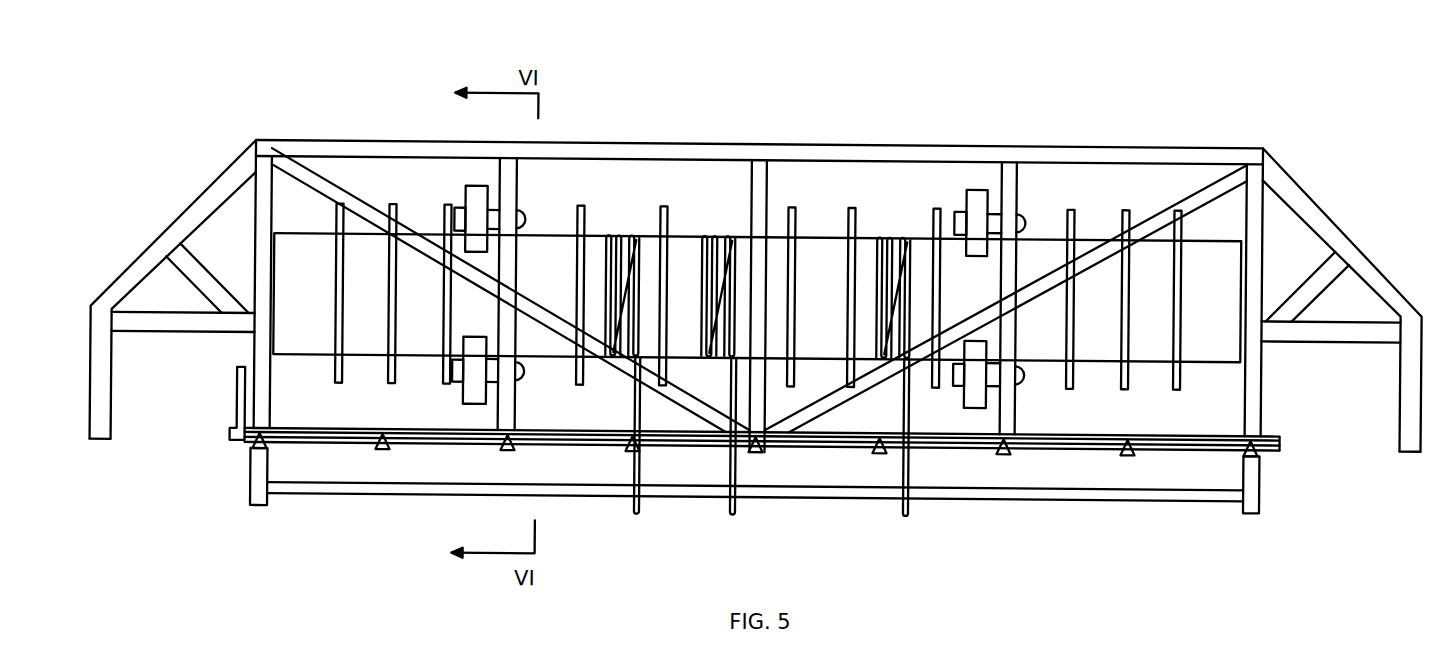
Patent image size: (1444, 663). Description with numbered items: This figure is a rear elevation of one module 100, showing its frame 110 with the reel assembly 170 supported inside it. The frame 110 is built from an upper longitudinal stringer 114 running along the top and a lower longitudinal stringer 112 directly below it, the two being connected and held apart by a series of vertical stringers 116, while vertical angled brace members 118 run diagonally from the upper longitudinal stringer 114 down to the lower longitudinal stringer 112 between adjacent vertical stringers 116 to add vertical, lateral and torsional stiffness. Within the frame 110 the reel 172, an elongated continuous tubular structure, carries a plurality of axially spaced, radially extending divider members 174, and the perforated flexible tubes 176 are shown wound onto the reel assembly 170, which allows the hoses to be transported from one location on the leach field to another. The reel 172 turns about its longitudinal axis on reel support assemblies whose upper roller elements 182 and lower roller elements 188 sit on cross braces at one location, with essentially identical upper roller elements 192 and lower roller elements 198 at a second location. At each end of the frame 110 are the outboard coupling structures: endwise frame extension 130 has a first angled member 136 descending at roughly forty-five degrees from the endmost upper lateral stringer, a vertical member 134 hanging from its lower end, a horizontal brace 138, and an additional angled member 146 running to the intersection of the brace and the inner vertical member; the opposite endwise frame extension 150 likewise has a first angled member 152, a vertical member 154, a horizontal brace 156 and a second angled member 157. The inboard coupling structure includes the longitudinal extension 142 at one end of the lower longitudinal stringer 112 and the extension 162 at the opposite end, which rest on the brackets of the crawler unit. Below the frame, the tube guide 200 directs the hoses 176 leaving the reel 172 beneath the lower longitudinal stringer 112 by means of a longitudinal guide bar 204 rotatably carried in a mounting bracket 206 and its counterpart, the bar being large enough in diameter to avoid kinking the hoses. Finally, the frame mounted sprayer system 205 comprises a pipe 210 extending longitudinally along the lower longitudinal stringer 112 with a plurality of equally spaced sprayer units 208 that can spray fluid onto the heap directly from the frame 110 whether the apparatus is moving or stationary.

The module 100 is at (1108, 73).
The frame 110 is at (1125, 136).
The lower longitudinal stringers 112 is at (1218, 447).
The upper longitudinal stringers 114 is at (868, 142).
The vertical stringers 116 is at (265, 205).
The vertical angled brace members 118 is at (330, 190).
The endwise frame extension 130 is at (192, 193).
The vertical member 134 is at (102, 415).
The first angled member 136 is at (140, 258).
The horizontal brace 138 is at (183, 333).
The longitudinal extension 142 is at (242, 447).
The additional angled member 146 is at (187, 277).
The endwise frame extension 150 is at (1345, 217).
The first angled member 152 is at (1382, 260).
The vertical member 154 is at (1400, 381).
The horizontal brace 156 is at (1368, 334).
The second angled member 157 is at (1307, 291).
The extension 162 is at (1290, 447).
The reel assembly 170 is at (1205, 360).
The reel 172 is at (1087, 230).
The divider members 174 is at (1122, 383).
The flexible tubes 176 is at (640, 260).
The upper roller elements 182 is at (477, 188).
The lower roller elements 188 is at (468, 396).
The upper roller elements 192 is at (973, 184).
The lower roller elements 198 is at (970, 402).
The tube guide 200 is at (1266, 509).
The longitudinal guide bar 204 is at (1162, 493).
The sprayer system 205 is at (238, 395).
The mounting bracket 206 is at (1265, 475).
The sprayer units 208 is at (761, 449).
The pipe 210 is at (597, 444).